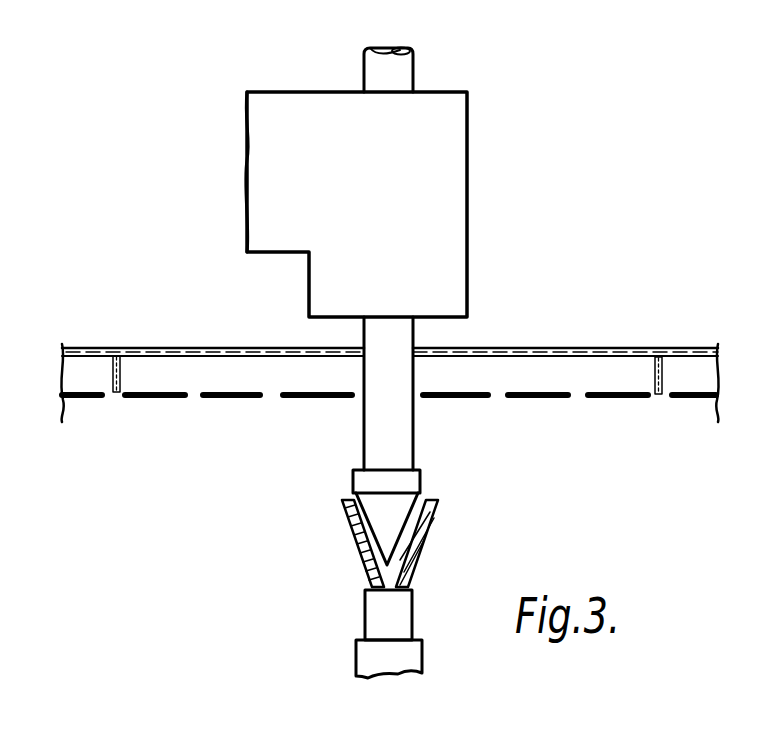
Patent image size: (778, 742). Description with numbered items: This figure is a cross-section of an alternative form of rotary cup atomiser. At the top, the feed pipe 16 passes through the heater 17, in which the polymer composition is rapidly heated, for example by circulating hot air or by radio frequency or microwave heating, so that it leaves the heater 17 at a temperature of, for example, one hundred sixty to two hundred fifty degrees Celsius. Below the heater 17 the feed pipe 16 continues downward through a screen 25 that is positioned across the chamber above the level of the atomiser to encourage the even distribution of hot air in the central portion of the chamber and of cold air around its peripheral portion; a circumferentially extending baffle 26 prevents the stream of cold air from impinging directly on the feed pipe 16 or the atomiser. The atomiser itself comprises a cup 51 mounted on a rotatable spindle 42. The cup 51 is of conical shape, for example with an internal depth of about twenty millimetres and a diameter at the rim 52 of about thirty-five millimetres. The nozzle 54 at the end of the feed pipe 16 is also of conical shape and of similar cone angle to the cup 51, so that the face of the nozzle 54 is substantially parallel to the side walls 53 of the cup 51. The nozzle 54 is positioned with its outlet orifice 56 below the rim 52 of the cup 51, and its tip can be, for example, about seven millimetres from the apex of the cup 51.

The feed pipe 16 is at (397, 73).
The heater 17 is at (430, 192).
The screen 25 is at (610, 396).
The baffle 26 is at (113, 376).
The rotatable spindle 42 is at (397, 612).
The cup 51 is at (398, 543).
The rim 52 is at (433, 502).
The side walls 53 is at (412, 525).
The nozzle 54 is at (415, 480).
The outlet orifice 56 is at (382, 562).